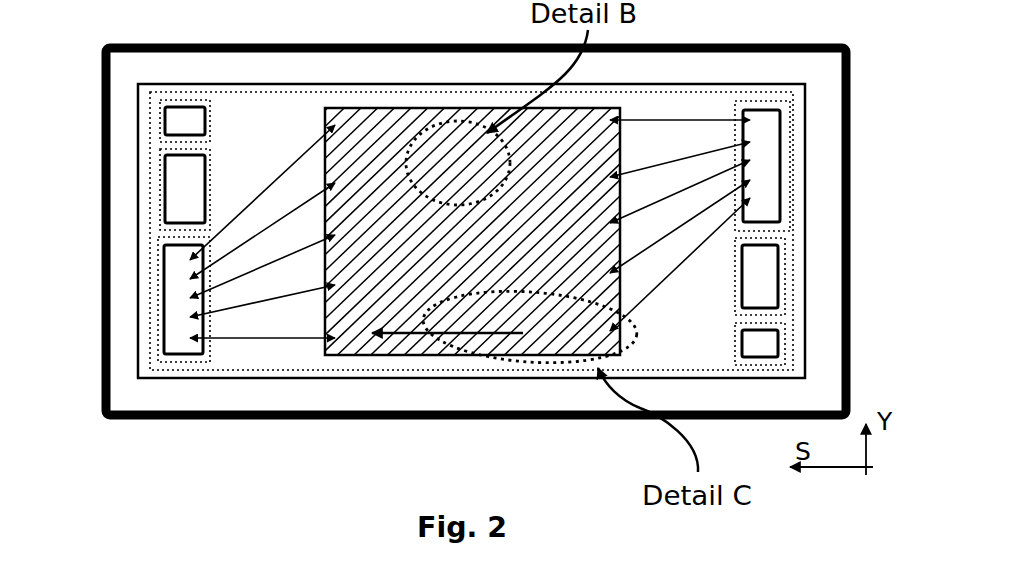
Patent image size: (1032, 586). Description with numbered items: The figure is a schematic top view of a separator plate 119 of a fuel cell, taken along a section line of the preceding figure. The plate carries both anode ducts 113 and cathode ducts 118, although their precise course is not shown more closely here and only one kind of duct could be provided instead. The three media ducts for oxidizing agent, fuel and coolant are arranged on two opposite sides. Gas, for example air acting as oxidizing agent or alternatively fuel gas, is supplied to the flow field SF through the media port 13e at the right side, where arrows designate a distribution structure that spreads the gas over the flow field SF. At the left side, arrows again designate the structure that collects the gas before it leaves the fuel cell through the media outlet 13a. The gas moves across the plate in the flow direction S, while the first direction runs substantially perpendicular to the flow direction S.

The media outlet 13a is at (177, 290).
The media port 13e is at (763, 168).
The separator plate 119 is at (161, 420).
The anode ducts 113 is at (343, 337).
The cathode ducts 118 is at (466, 297).
The flow field SF is at (453, 338).
The flow direction S is at (451, 409).